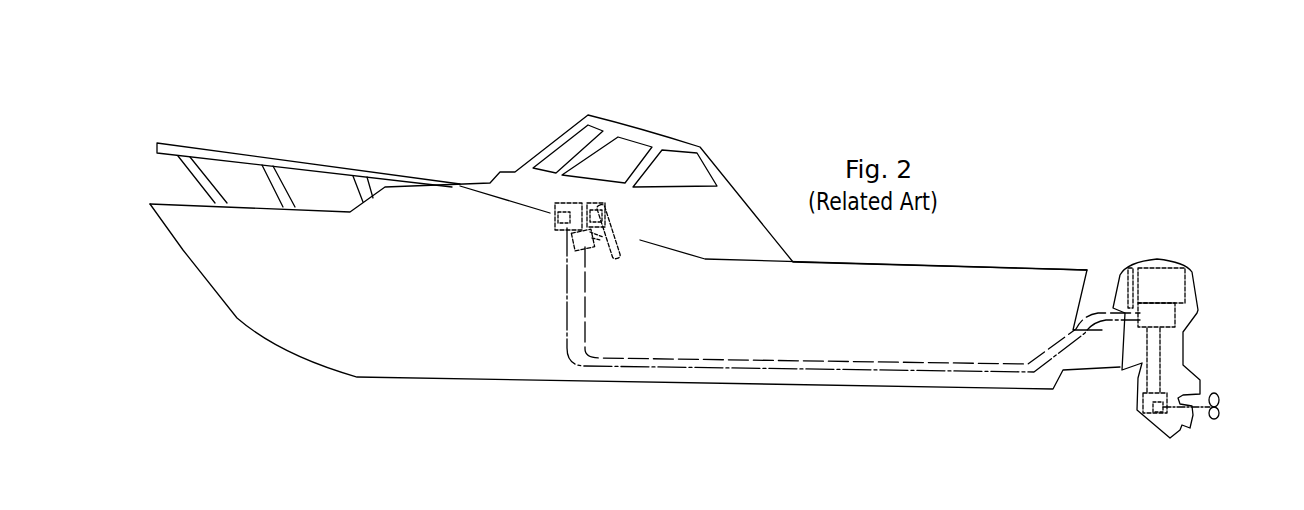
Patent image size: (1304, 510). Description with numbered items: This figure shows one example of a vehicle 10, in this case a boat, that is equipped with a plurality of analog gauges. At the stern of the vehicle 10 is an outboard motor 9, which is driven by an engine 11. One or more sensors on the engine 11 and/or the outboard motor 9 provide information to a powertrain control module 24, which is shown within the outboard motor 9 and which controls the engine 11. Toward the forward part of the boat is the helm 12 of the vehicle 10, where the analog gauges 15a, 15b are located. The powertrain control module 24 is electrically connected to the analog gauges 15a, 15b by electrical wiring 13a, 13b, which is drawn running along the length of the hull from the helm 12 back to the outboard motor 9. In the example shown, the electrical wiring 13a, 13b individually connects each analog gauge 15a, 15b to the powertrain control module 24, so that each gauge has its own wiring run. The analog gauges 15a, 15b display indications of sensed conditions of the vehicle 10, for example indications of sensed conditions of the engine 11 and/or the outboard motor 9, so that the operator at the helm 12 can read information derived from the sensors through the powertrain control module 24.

The outboard motor 9 is at (1173, 258).
The vehicle 10 is at (518, 368).
The engine 11 is at (1200, 278).
The helm 12 is at (548, 246).
The electrical wiring 13a is at (667, 368).
The electrical wiring 13b is at (722, 358).
The analog gauge 15a is at (556, 222).
The analog gauge 15b is at (617, 240).
The powertrain control module 24 is at (1183, 320).